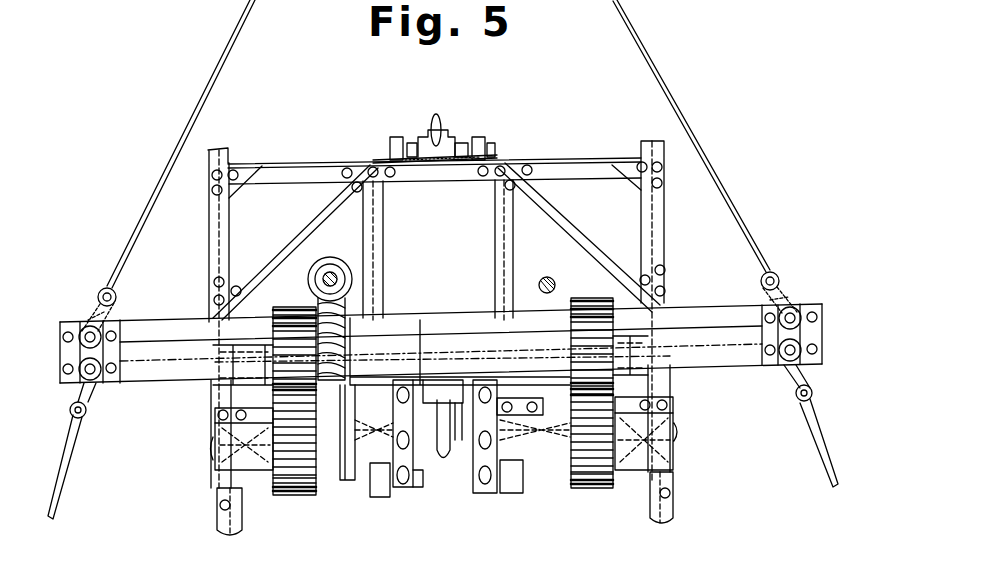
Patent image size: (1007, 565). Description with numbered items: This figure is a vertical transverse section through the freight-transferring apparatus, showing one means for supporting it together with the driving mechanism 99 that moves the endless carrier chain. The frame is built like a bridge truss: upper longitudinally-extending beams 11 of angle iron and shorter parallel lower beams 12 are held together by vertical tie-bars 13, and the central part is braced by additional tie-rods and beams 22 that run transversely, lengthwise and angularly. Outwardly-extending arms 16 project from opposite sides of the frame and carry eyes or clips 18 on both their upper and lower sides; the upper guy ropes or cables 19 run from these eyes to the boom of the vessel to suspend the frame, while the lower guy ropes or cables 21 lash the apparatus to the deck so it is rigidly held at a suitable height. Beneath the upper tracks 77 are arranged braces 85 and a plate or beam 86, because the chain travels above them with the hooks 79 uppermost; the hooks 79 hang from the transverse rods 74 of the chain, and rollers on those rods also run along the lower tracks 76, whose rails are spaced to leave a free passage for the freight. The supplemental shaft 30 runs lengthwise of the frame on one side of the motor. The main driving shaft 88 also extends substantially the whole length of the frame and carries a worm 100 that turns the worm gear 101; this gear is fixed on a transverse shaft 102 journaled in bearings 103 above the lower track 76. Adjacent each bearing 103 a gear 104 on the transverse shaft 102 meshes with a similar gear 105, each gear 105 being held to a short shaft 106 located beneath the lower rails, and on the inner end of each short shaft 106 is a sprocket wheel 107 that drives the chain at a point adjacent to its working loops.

The upper longitudinally-extending beams 11 is at (235, 150).
The lower beams 12 is at (240, 487).
The vertical tie-bars 13 is at (660, 205).
The outwardly-extending arms 16 is at (144, 320).
The eyes or clips 18 is at (100, 310).
The guy ropes or cables 19 is at (165, 183).
The guy ropes or cables 21 is at (70, 465).
The tie-rods and beams 22 is at (290, 252).
The supplemental shaft 30 is at (550, 283).
The rods 74 is at (455, 437).
The lower tracks 76 is at (478, 374).
The upper tracks 77 is at (385, 160).
The hooks 79 is at (443, 460).
The braces 85 is at (552, 170).
The plate or beam 86 is at (455, 183).
The main driving shaft 88 is at (340, 282).
The mechanism 99 is at (459, 290).
The worm 100 is at (358, 262).
The worm gear 101 is at (353, 316).
The transverse shaft 102 is at (410, 352).
The bearings 103 is at (217, 350).
The gear 104 is at (283, 306).
The gears 105 is at (300, 492).
The short shaft 106 is at (213, 446).
The sprocket wheel 107 is at (407, 488).